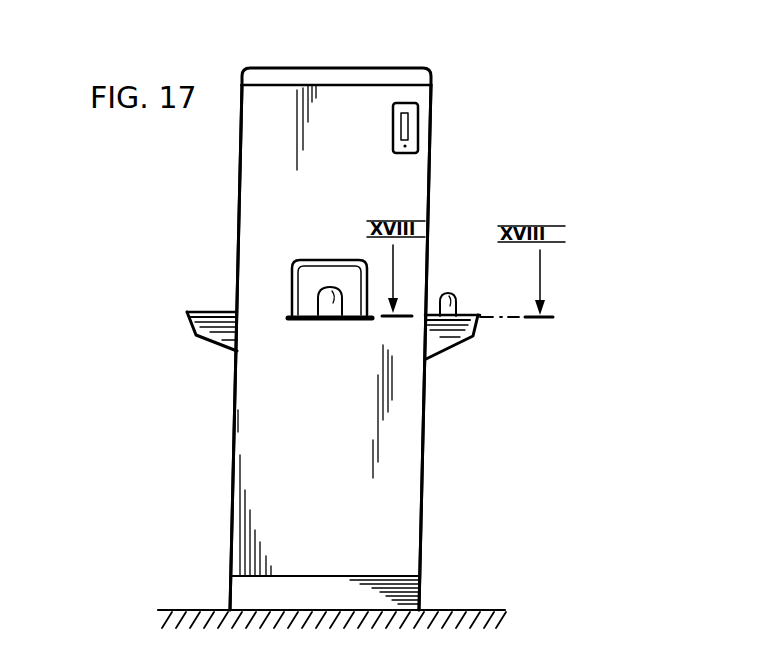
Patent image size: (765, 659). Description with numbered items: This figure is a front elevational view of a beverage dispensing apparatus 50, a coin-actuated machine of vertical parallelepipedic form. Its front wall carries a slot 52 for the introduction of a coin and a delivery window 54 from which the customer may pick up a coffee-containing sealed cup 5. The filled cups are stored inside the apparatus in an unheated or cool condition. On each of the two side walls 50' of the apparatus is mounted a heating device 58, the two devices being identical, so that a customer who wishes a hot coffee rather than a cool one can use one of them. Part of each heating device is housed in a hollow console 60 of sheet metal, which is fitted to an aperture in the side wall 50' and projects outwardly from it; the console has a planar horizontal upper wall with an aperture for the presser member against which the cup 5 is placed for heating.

The coin-actuated dispensing apparatus 50 is at (360, 339).
The side wall 50' is at (327, 347).
The slot 52 is at (410, 127).
The delivery window 54 is at (295, 250).
The sealed cup 5 is at (331, 303).
The heating device 58 is at (210, 312).
The hollow console 60 is at (197, 335).